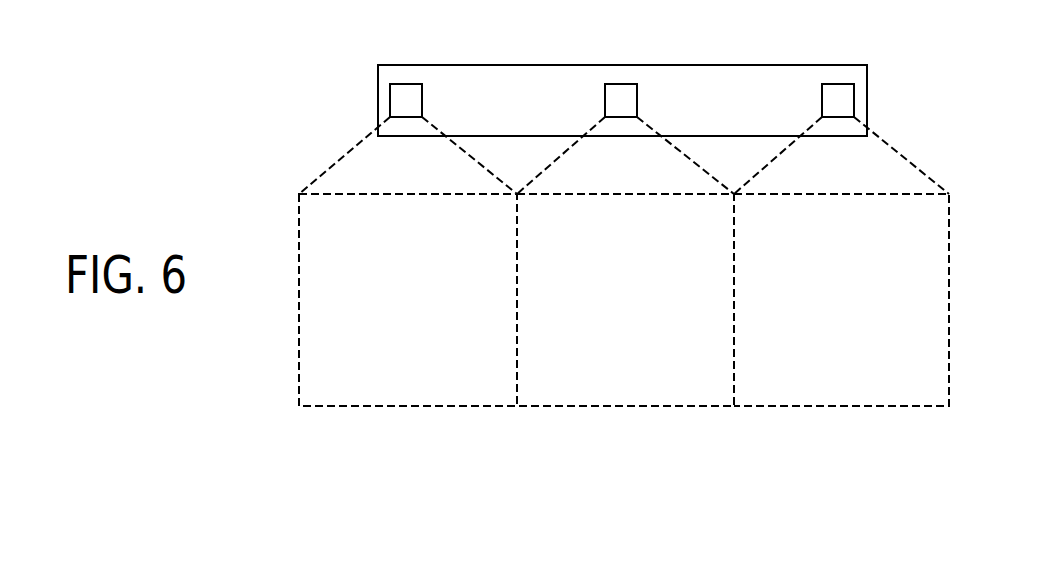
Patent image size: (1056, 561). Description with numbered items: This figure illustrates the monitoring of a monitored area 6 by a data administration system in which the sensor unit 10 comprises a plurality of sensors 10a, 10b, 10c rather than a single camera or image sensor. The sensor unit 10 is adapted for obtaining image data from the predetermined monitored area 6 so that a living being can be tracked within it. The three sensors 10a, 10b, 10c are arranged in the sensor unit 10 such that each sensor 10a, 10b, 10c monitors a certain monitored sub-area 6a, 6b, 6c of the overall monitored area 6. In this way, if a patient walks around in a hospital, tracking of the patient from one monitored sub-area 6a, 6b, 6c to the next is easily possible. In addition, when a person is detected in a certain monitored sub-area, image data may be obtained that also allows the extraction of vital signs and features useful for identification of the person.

The monitored area 6 is at (666, 287).
The monitored sub-area 6a is at (405, 396).
The monitored sub-area 6b is at (604, 396).
The monitored sub-area 6c is at (829, 396).
The sensor unit 10 is at (867, 82).
The sensor 10a is at (412, 92).
The sensor 10b is at (627, 92).
The sensor 10c is at (838, 92).